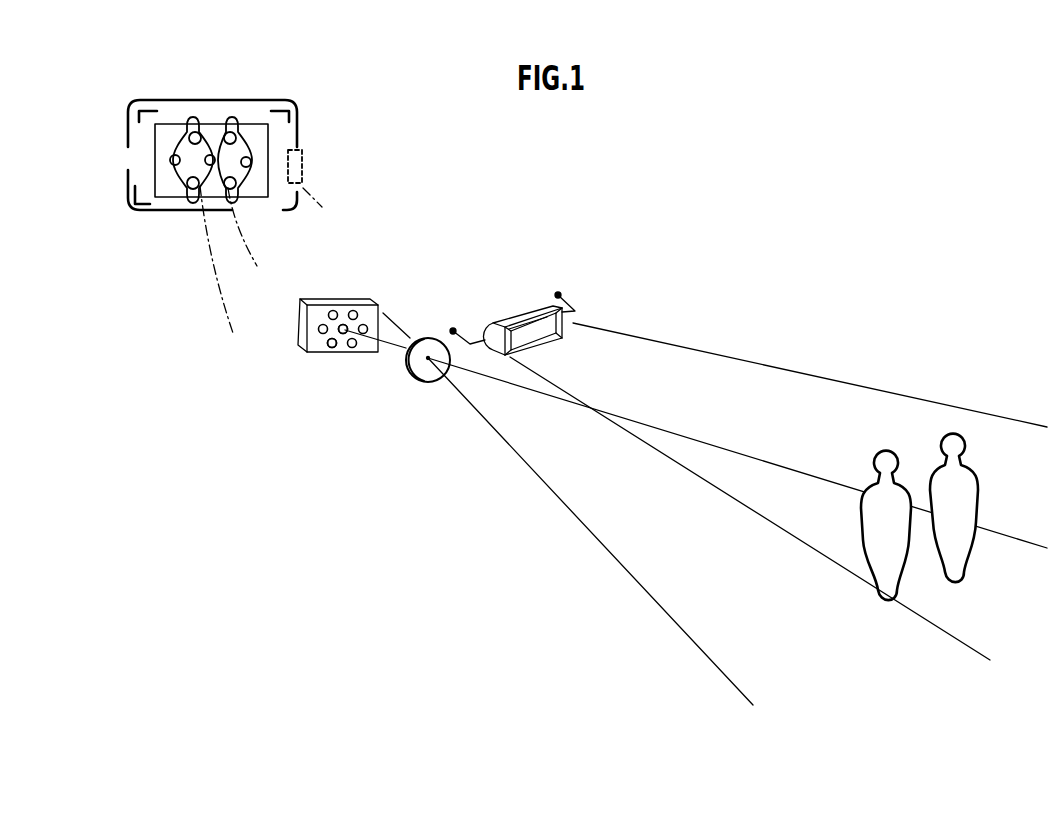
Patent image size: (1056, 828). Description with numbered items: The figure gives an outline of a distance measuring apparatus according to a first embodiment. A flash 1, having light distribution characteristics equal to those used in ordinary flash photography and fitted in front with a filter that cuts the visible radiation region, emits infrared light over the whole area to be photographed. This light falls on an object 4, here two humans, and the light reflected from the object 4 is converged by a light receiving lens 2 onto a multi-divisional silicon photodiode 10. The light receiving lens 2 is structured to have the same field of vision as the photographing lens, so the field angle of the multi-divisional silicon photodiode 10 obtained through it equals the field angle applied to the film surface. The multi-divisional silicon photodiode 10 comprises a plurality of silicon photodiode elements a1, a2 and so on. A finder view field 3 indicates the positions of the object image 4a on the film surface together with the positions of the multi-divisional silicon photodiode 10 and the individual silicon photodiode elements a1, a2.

The flash 1 is at (527, 303).
The light receiving lens 2 is at (415, 383).
The finder view field 3 is at (178, 100).
The object 4 is at (928, 524).
The object image 4a is at (198, 134).
The multi-divisional silicon photodiode 10 is at (322, 207).
The silicon photodiode element a1 is at (328, 346).
The silicon photodiode element a2 is at (340, 330).